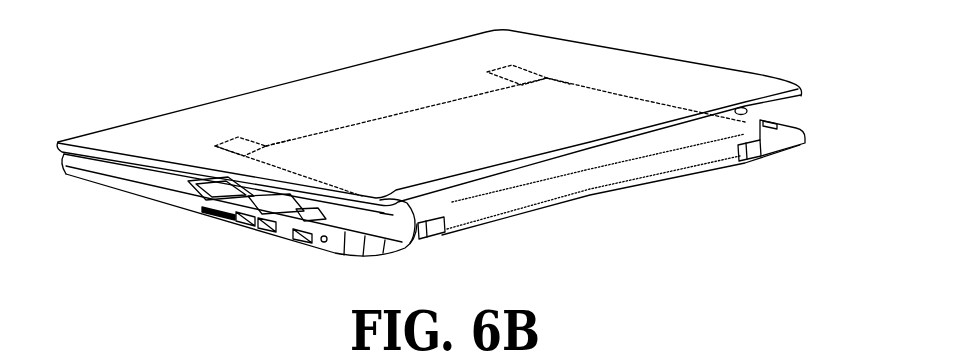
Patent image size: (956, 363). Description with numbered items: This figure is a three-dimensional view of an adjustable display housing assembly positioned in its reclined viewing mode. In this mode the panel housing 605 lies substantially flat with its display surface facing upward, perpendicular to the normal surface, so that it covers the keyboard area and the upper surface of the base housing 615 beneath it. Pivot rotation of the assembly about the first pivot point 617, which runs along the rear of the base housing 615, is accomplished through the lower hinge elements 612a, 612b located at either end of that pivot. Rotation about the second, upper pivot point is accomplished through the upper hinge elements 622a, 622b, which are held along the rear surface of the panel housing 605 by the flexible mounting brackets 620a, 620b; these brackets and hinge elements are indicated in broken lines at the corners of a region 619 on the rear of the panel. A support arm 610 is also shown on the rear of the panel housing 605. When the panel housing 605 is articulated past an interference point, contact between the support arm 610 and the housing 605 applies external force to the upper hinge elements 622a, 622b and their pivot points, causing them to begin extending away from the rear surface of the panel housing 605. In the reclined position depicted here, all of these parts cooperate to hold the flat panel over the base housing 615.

The panel housing 605 is at (708, 73).
The support arm 610 is at (616, 98).
The lower hinge element 612a is at (421, 240).
The lower hinge element 612b is at (752, 163).
The base housing 615 is at (123, 188).
The first pivot point 617 is at (567, 207).
The sensor/antenna region 619 is at (414, 105).
The flexible mounting bracket 620a is at (262, 124).
The flexible mounting bracket 620b is at (526, 55).
The upper hinge element 622a is at (272, 147).
The upper hinge element 622b is at (547, 77).